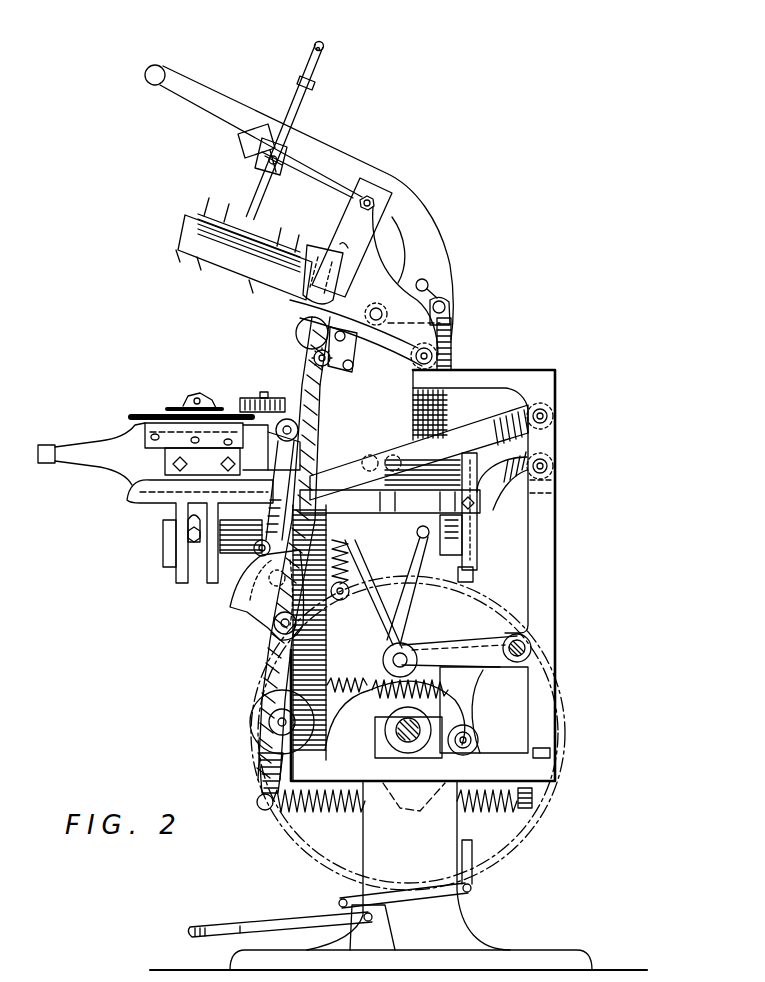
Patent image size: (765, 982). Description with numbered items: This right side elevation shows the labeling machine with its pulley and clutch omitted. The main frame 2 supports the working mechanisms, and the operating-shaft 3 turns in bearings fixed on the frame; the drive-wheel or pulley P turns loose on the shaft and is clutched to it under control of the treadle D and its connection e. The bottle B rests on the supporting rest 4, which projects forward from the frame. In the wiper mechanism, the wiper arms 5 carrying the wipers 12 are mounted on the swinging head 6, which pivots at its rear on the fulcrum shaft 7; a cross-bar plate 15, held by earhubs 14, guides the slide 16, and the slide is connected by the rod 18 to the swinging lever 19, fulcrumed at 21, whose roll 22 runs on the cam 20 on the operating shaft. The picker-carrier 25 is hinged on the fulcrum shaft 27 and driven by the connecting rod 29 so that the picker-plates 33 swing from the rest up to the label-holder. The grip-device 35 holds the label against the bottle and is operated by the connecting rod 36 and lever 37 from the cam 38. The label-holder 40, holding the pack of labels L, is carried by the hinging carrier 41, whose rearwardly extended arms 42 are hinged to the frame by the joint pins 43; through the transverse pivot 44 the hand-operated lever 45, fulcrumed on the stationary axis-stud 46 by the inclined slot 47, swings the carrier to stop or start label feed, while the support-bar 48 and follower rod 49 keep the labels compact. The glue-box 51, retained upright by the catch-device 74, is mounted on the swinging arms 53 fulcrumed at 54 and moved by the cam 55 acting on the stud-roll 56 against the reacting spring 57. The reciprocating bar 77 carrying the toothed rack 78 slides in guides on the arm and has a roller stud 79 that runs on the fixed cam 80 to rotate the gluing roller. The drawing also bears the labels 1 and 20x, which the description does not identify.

The carriage 1 is at (163, 412).
The main frame 2 is at (452, 378).
The operating-shaft 3 is at (394, 745).
The supporting rest 4 is at (190, 489).
The wiper arms 5 is at (334, 492).
The swinging head 6 is at (504, 492).
The fulcrum shaft 7 is at (550, 469).
The wipers 12 is at (168, 434).
The earhubs 14 is at (419, 585).
The cross-bar plate 15 is at (487, 517).
The slide 16 is at (478, 552).
The rod 18 is at (393, 594).
The swinging lever 19 is at (493, 677).
The cam 20 is at (415, 797).
The cam lever 20x is at (459, 638).
The fulcrum 21 is at (532, 648).
The roll 22 is at (480, 737).
The picker-carrier 25 is at (382, 455).
The fulcrum shaft 27 is at (553, 417).
The connecting rod 29 is at (365, 541).
The picker-plates 33 is at (136, 416).
The grip-device 35 is at (192, 398).
The connecting rod 36 is at (338, 642).
The lever 37 is at (349, 594).
The cam 38 is at (352, 748).
The label-holder 40 is at (198, 233).
The hinging carrier 41 is at (347, 244).
The rearwardly extended arms 42 is at (410, 334).
The joint pins 43 is at (444, 352).
The transverse pivot 44 is at (380, 309).
The hand-operated lever 45 is at (217, 98).
The stationary axis-stud 46 is at (446, 306).
The inclined slot 47 is at (430, 286).
The support-bar 48 is at (291, 174).
The follower rod 49 is at (298, 113).
The glue-box 51 is at (300, 333).
The supporting arms 53 is at (324, 397).
The fulcrum 54 is at (276, 636).
The cam 55 is at (374, 681).
The stud-roll 56 is at (249, 722).
The reacting spring 57 is at (394, 796).
The catch-device 74 is at (354, 358).
The reciprocating bar 77 is at (273, 500).
The toothed rack 78 is at (314, 360).
The roller stud 79 is at (255, 563).
The fixed cam 80 is at (240, 605).
The bottle B is at (127, 468).
The treadle D is at (222, 929).
The pack of labels L is at (224, 277).
The pulley P is at (520, 838).
The connection e is at (473, 885).